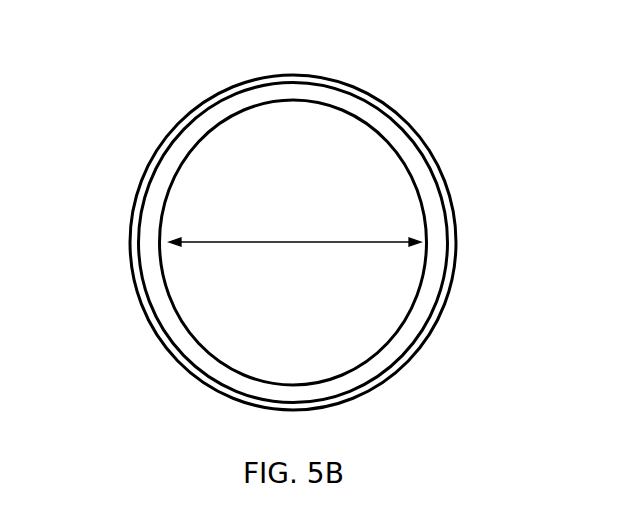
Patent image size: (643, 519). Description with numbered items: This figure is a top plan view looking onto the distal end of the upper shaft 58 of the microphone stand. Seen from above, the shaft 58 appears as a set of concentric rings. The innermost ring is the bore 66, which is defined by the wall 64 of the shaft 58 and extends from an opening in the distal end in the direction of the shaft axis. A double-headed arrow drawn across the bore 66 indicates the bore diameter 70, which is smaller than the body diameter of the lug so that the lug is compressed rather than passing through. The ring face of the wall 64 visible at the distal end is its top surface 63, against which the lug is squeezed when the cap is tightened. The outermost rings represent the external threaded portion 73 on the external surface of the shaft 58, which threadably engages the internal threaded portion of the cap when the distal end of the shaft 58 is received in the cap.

The shaft 58 is at (137, 101).
The top surface 63 is at (383, 127).
The wall 64 is at (383, 127).
The bore 66 is at (363, 188).
The bore diameter 70 is at (343, 243).
The external threaded portion 73 is at (448, 193).